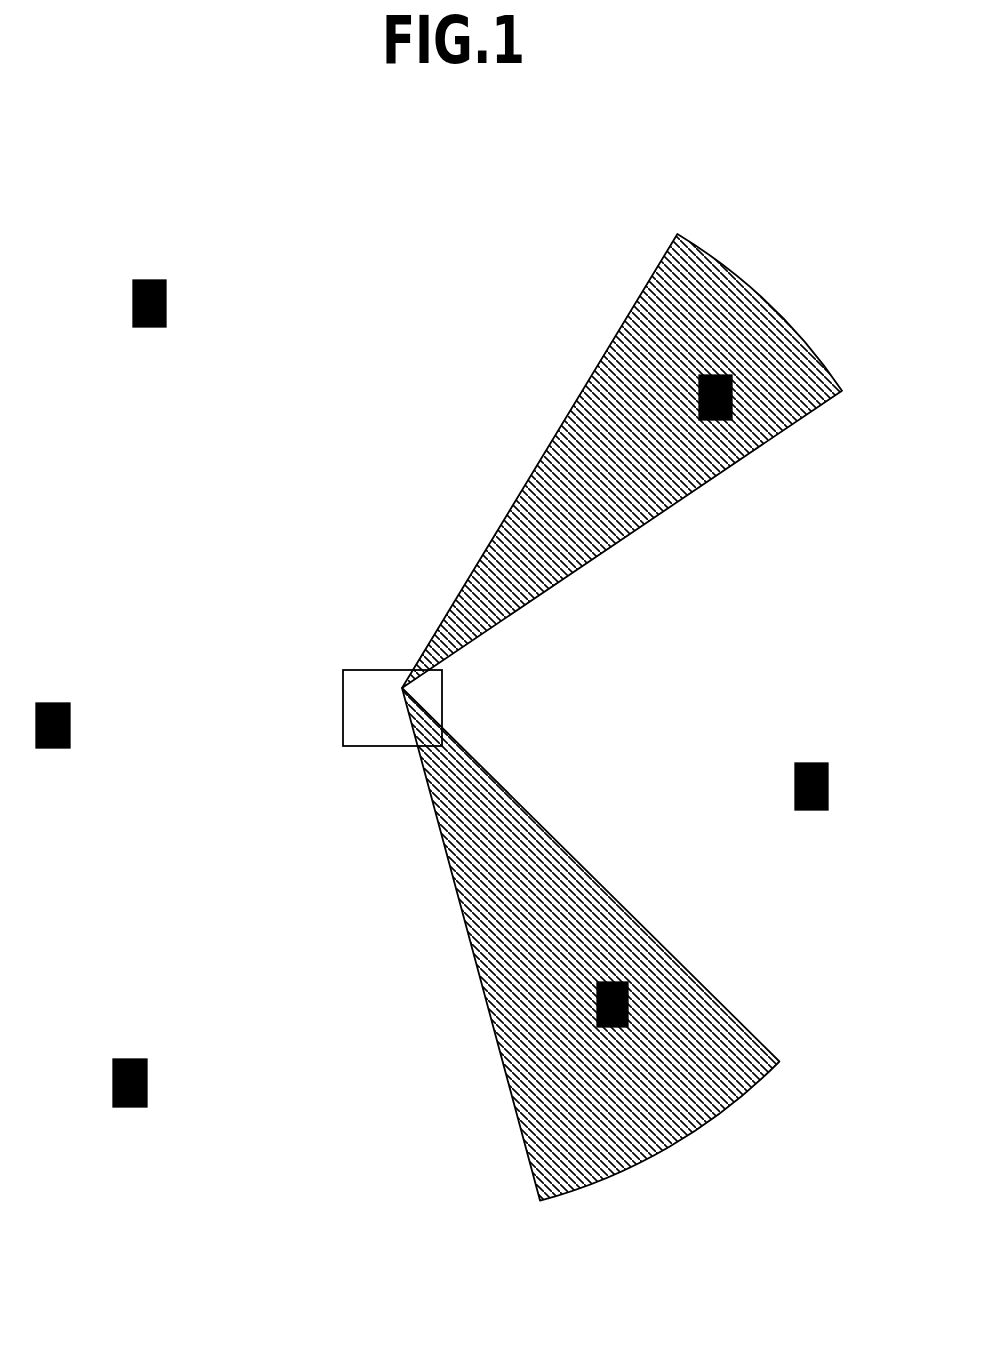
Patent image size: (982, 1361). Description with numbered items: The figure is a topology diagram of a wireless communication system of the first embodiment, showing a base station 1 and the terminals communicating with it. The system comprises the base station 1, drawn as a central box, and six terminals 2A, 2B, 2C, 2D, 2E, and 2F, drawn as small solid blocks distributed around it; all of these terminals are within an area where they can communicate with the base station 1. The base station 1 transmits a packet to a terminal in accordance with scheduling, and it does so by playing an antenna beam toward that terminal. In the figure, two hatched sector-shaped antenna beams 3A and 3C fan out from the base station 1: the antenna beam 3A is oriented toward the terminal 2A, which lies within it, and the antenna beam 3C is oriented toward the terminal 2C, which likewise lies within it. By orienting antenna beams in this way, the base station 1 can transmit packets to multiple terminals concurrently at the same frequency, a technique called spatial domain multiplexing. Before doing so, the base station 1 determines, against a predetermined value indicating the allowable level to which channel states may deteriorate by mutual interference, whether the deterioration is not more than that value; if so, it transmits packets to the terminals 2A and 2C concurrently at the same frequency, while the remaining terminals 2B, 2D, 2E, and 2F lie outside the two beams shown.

The base station 1 is at (376, 669).
The terminal 2A is at (732, 420).
The terminal 2B is at (827, 764).
The terminal 2C is at (628, 982).
The terminal 2D is at (145, 1107).
The terminal 2E is at (68, 748).
The terminal 2F is at (166, 280).
The antenna beam 3A is at (747, 285).
The antenna beam 3C is at (657, 1152).